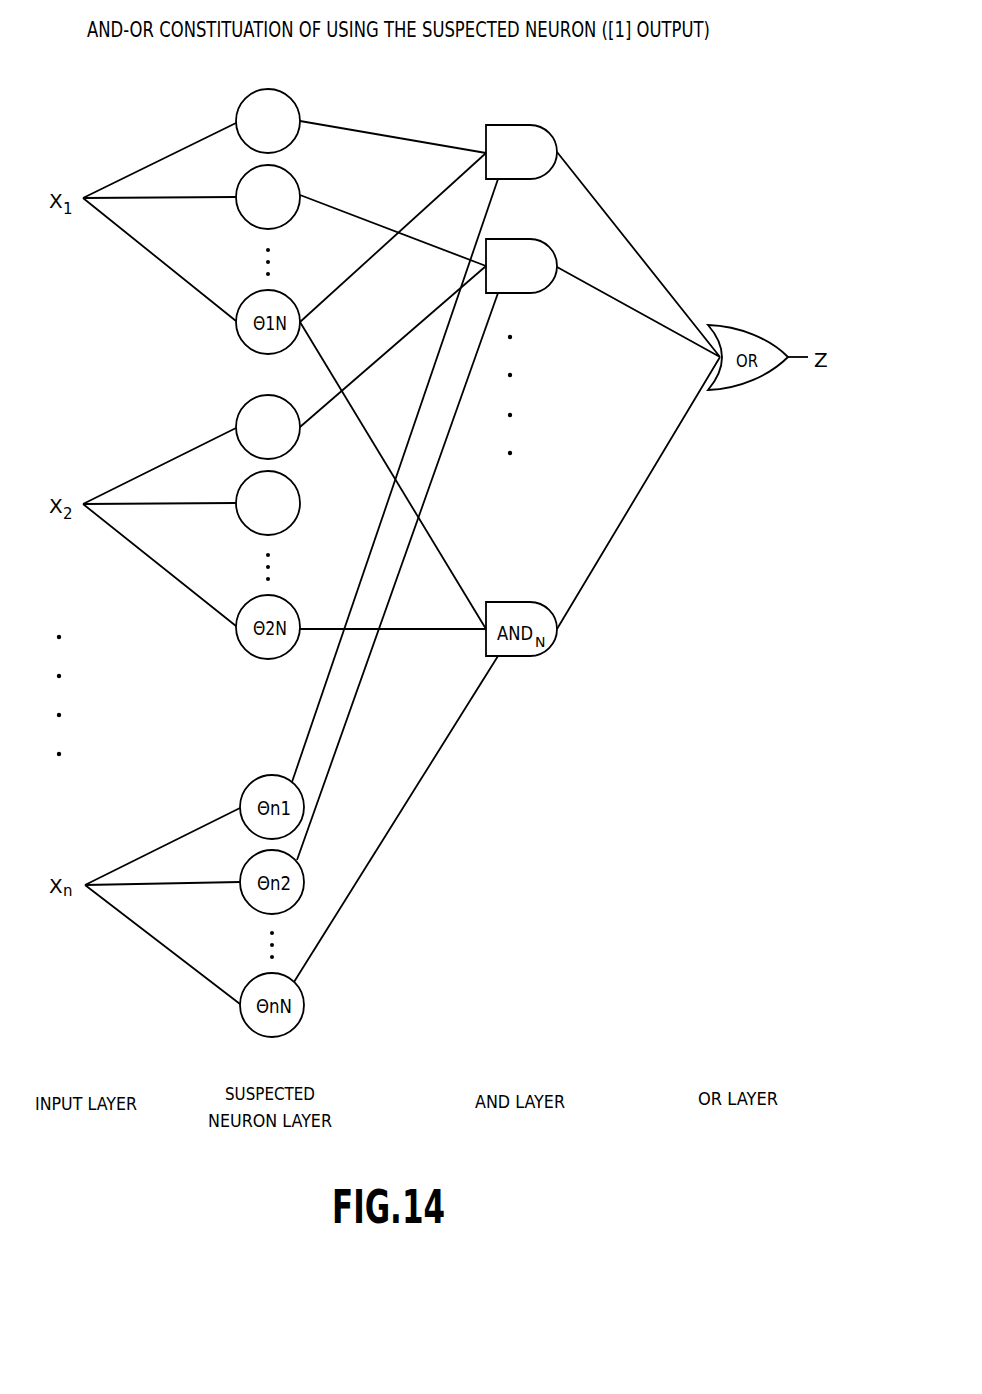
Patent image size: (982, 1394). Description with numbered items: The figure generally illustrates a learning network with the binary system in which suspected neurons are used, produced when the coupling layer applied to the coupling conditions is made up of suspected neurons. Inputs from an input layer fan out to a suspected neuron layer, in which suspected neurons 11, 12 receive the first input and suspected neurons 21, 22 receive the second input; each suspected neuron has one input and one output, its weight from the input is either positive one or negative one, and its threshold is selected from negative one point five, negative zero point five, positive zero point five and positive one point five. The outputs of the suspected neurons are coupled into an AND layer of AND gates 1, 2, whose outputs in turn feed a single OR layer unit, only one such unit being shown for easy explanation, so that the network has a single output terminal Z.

The suspected neuron Θ 11 is at (268, 121).
The suspected neuron Θ 12 is at (268, 197).
The suspected neuron Θ 21 is at (268, 427).
The suspected neuron Θ 22 is at (268, 503).
The AND gate AND1 1 is at (521, 152).
The AND gate AND2 2 is at (521, 266).